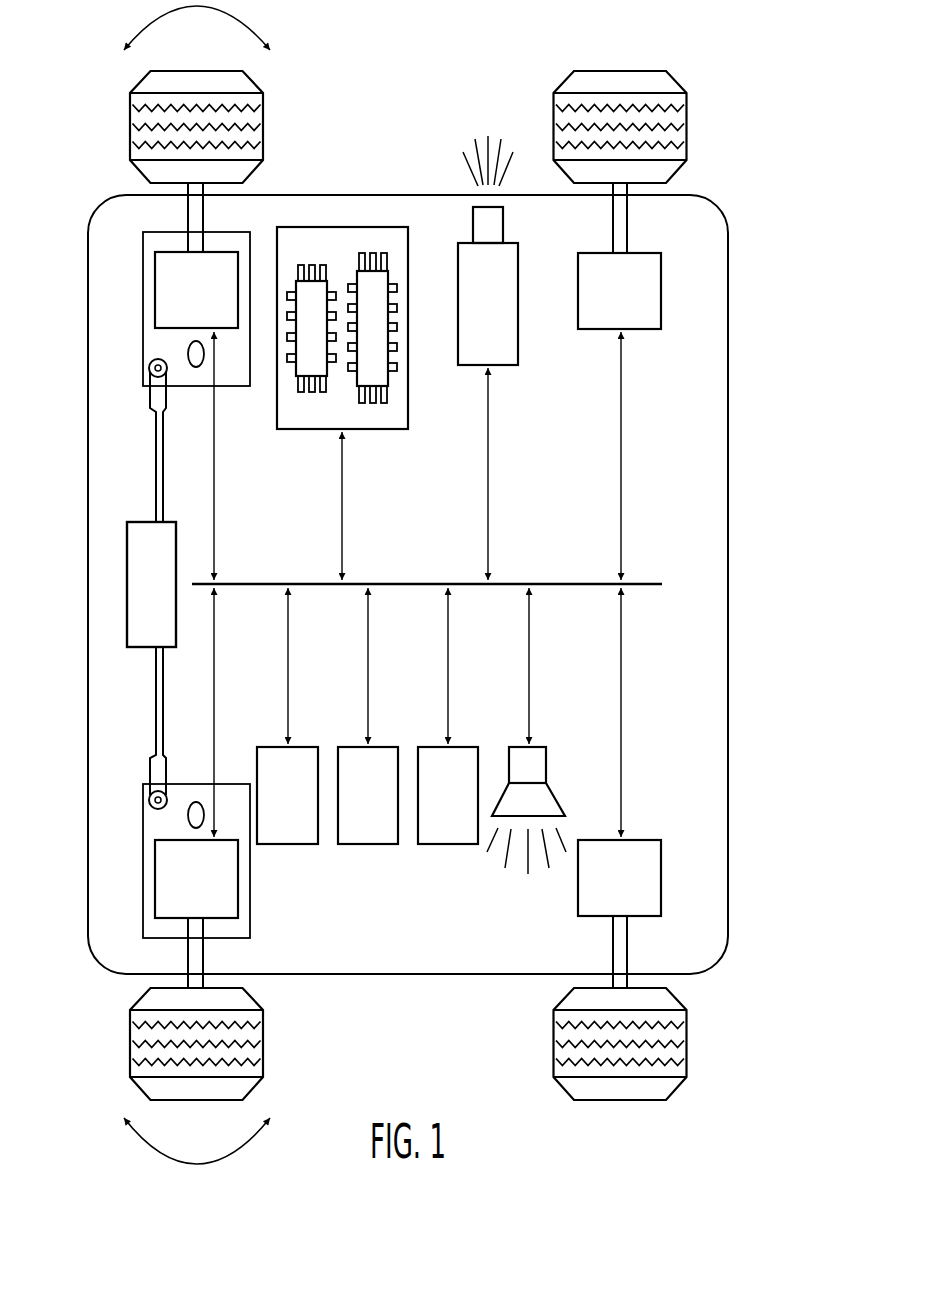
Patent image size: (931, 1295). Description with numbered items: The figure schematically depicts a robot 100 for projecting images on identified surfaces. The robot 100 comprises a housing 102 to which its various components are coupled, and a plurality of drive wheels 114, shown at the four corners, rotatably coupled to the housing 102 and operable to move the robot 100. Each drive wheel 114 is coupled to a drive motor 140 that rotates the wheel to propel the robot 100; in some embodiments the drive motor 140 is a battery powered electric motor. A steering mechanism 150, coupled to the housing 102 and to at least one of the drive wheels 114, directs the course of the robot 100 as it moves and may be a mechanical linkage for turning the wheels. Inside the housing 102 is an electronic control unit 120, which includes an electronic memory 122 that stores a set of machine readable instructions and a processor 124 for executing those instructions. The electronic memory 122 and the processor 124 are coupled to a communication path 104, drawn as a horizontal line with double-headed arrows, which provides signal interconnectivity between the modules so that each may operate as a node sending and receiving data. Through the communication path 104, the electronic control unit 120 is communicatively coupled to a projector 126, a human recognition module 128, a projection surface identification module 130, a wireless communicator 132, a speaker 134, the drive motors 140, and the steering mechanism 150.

The robot 100 is at (736, 172).
The housing 102 is at (729, 503).
The communication path 104 is at (645, 580).
The drive wheels 114 is at (130, 120).
The electronic control unit 120 is at (363, 366).
The electronic memory 122 is at (381, 330).
The processor 124 is at (305, 367).
The projector 126 is at (507, 368).
The human recognition module 128 is at (289, 848).
The projection surface identification module 130 is at (369, 848).
The wireless communicator 132 is at (449, 848).
The speaker 134 is at (544, 745).
The drive motors 140 is at (155, 292).
The steering mechanism 150 is at (138, 521).